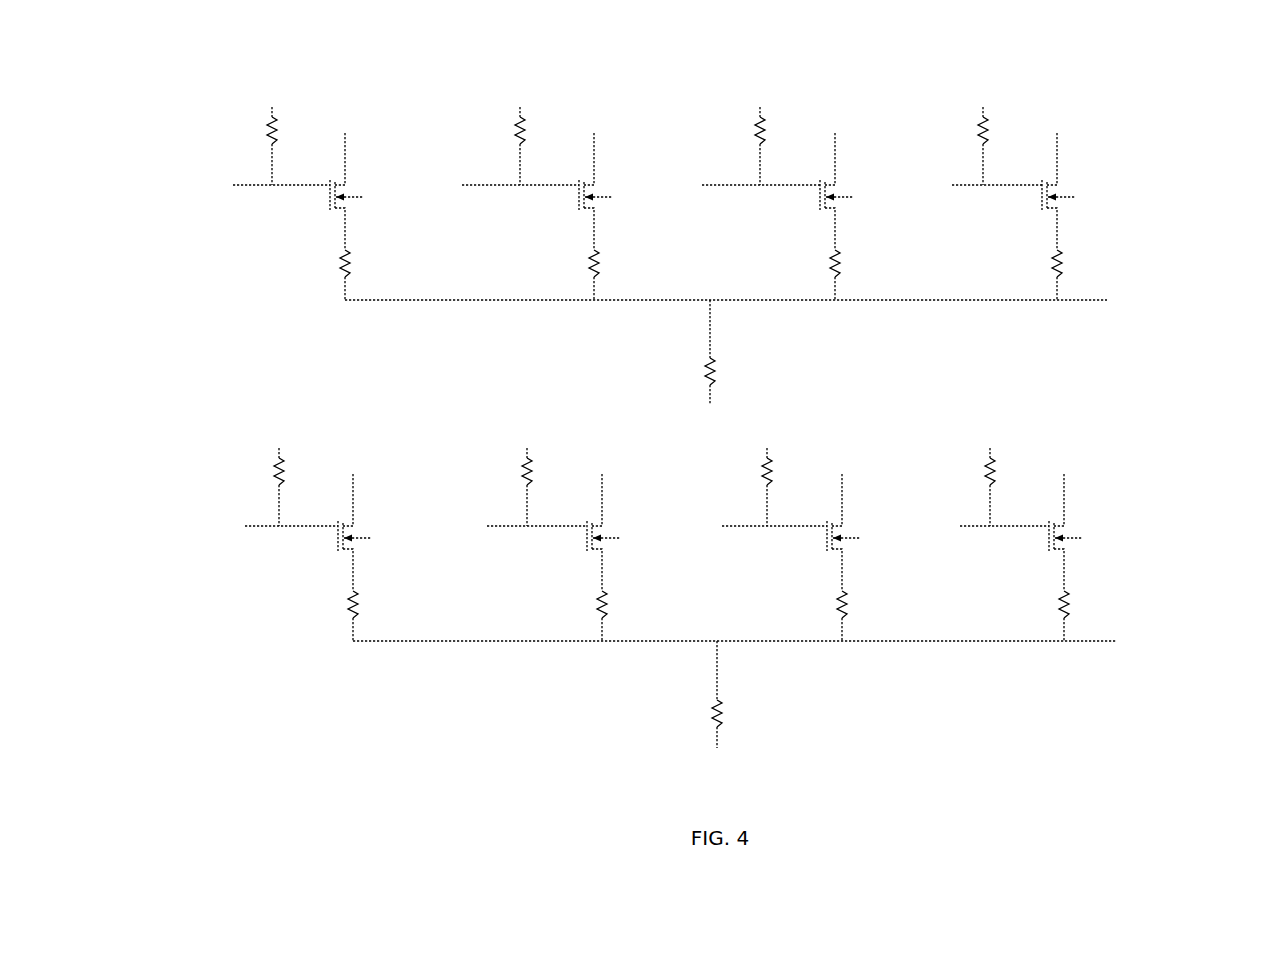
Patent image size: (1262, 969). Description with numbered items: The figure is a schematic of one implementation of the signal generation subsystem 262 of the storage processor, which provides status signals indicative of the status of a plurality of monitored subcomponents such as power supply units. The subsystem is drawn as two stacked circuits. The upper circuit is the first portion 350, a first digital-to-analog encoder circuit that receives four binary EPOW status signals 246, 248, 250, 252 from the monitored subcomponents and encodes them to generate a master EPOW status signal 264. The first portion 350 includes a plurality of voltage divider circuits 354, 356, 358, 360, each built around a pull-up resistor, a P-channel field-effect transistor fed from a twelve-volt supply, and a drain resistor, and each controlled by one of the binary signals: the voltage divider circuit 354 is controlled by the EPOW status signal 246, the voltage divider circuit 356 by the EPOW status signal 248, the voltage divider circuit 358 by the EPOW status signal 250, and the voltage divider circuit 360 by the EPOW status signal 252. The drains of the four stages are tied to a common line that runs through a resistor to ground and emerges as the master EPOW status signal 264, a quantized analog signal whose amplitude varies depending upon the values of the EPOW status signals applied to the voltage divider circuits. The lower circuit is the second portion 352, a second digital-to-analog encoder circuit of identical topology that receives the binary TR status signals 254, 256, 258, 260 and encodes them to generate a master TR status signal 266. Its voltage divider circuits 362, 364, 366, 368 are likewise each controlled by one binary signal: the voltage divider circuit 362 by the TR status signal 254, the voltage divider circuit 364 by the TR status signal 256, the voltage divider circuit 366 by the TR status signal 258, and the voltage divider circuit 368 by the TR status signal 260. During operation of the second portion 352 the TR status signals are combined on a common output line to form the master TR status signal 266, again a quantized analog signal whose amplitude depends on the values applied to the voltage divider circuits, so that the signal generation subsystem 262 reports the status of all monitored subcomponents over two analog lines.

The signal generation subsystem 262 is at (673, 395).
The first portion 350 is at (157, 98).
The second portion 352 is at (157, 431).
The voltage divider circuit 354 is at (370, 135).
The voltage divider circuit 356 is at (612, 135).
The voltage divider circuit 358 is at (855, 135).
The voltage divider circuit 360 is at (1082, 135).
The voltage divider circuit 362 is at (372, 470).
The voltage divider circuit 364 is at (612, 470).
The voltage divider circuit 366 is at (857, 470).
The voltage divider circuit 368 is at (1081, 470).
The EPOW status signal 246 is at (247, 180).
The EPOW status signal 248 is at (487, 180).
The EPOW status signal 250 is at (726, 180).
The EPOW status signal 252 is at (964, 180).
The TR status signal 254 is at (258, 522).
The TR status signal 256 is at (504, 522).
The TR status signal 258 is at (741, 522).
The TR status signal 260 is at (971, 522).
The master EPOW status signal 264 is at (780, 343).
The master TR status signal 266 is at (788, 689).